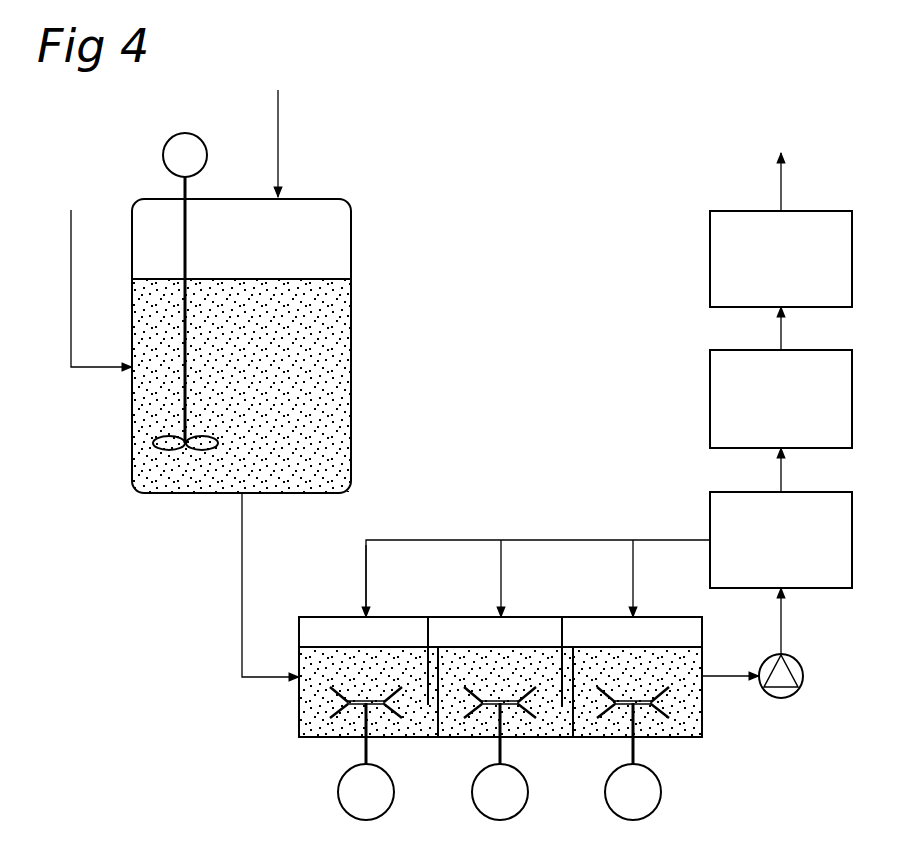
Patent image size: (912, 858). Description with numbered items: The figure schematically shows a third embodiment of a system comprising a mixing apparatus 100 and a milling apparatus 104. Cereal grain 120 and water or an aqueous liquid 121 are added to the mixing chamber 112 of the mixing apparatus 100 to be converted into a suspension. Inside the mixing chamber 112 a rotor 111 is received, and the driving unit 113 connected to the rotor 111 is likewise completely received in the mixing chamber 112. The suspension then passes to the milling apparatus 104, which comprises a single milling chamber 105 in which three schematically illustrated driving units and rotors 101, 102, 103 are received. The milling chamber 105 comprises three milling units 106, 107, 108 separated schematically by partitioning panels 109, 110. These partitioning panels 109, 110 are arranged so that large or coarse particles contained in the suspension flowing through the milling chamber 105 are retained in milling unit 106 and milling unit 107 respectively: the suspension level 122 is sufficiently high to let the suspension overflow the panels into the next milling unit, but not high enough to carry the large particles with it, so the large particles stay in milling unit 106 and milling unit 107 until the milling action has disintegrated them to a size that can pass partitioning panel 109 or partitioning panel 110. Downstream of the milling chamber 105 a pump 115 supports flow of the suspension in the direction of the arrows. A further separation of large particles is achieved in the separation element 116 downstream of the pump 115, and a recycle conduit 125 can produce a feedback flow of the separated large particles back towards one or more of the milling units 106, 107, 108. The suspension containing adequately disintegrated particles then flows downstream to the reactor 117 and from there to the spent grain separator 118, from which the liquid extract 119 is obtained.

The mixing apparatus 100 is at (366, 256).
The driving unit and rotor 101 is at (360, 718).
The driving unit and rotor 102 is at (494, 718).
The driving unit and rotor 103 is at (627, 718).
The milling apparatus 104 is at (250, 692).
The milling chamber 105 is at (702, 706).
The milling unit 106 is at (318, 628).
The milling unit 107 is at (473, 622).
The milling unit 108 is at (613, 625).
The partitioning panel 109 is at (433, 655).
The partitioning panel 110 is at (568, 650).
The rotor 111 is at (184, 412).
The mixing chamber 112 is at (352, 365).
The driving unit 113 is at (186, 134).
The pump 115 is at (791, 684).
The separation element 116 is at (815, 577).
The reactor 117 is at (718, 382).
The spent grain separator 118 is at (718, 258).
The liquid extract 119 is at (779, 174).
The cereal grain 120 is at (279, 121).
The water or aqueous liquid 121 is at (70, 231).
The suspension level 122 is at (368, 650).
The recycle conduit 125 is at (546, 540).